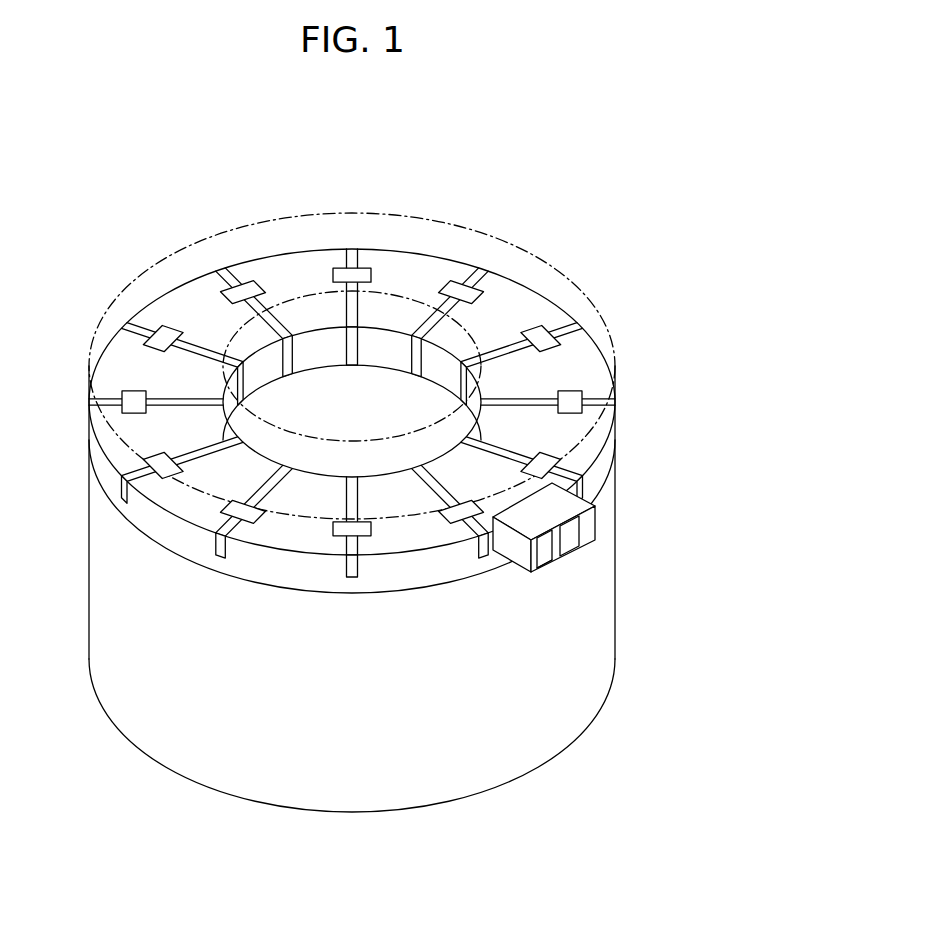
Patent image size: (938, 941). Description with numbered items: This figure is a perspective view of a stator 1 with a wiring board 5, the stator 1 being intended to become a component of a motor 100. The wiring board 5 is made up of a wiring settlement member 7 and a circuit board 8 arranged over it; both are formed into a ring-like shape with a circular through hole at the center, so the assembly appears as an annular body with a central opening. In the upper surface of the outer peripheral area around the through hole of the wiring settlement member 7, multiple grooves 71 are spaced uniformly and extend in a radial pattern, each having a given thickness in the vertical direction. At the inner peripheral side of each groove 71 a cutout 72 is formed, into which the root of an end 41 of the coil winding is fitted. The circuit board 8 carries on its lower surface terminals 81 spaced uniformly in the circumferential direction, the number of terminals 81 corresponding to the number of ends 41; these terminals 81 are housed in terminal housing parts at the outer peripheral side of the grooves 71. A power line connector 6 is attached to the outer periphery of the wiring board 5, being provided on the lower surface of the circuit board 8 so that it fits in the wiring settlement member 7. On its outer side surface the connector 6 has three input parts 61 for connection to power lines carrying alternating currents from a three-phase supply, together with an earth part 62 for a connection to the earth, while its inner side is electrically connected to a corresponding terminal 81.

The motor 100 is at (627, 92).
The stator 1 is at (604, 180).
The wiring board 5 is at (704, 381).
The power line connector 6 is at (570, 503).
The input parts 61 is at (575, 545).
The earth part 62 is at (545, 562).
The wiring settlement member 7 is at (640, 430).
The circuit board 8 is at (640, 350).
The end 41 is at (355, 578).
The grooves 71 is at (556, 328).
The cutout 72 is at (352, 366).
The terminals 81 is at (158, 461).